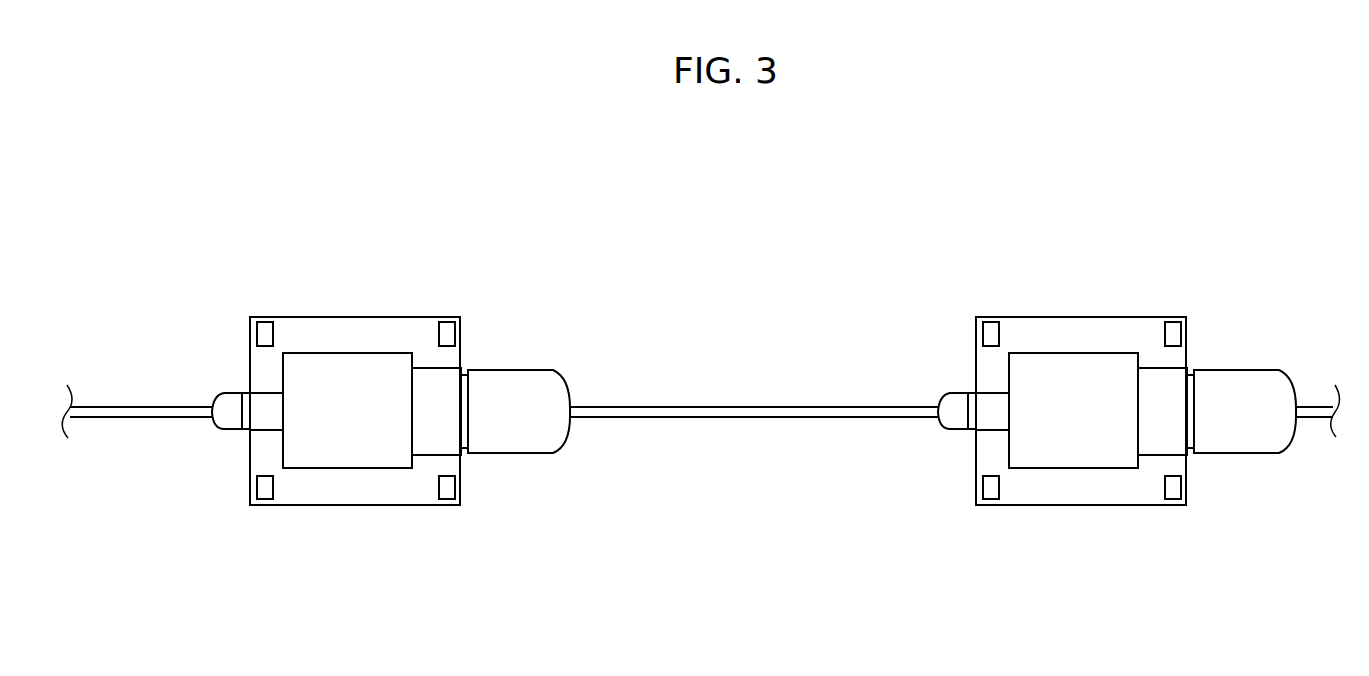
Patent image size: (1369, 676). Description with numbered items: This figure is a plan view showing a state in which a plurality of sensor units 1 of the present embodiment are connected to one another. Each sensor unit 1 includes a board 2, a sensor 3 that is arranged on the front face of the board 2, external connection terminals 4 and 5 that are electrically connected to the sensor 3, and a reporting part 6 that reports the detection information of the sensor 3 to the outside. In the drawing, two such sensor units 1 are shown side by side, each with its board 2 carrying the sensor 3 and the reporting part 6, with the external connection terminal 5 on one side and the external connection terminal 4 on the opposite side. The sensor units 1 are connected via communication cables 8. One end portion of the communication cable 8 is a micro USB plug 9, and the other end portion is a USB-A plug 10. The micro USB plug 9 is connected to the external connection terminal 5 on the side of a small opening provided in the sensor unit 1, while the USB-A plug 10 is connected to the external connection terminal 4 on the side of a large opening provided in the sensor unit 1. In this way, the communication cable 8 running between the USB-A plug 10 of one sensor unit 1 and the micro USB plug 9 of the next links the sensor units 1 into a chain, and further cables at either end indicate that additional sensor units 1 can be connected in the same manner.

The sensor unit 1 is at (374, 276).
The board 2 is at (367, 497).
The sensor 3 is at (332, 458).
The external connection terminal 4 is at (447, 375).
The external connection terminal 5 is at (270, 422).
The reporting part 6 is at (266, 330).
The communication cable 8 is at (731, 410).
The micro USB plug 9 is at (230, 403).
The USB-A plug 10 is at (510, 382).